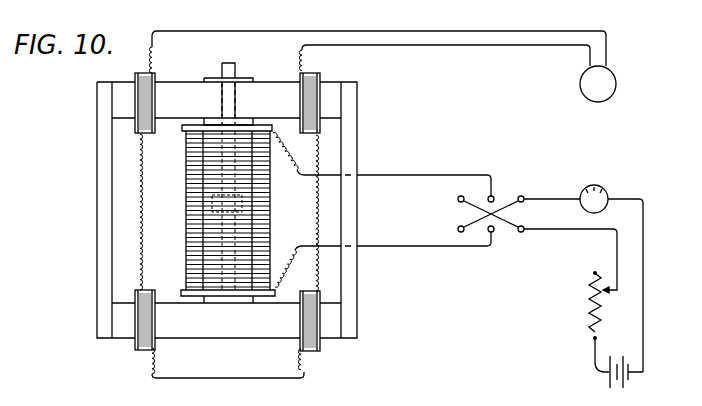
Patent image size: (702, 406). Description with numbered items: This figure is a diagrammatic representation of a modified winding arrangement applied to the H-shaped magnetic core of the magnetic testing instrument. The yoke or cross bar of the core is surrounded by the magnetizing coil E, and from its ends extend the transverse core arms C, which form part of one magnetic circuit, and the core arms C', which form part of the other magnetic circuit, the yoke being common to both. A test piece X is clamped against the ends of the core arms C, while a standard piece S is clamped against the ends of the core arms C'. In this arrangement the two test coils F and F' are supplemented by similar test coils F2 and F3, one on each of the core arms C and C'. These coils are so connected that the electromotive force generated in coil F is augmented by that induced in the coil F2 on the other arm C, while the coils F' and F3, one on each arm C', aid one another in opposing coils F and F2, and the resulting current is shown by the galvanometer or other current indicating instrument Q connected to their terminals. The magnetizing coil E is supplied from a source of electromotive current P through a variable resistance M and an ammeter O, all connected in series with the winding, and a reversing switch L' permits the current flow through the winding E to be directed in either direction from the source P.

The standard piece S is at (97, 266).
The magnetizing coil E is at (273, 226).
The core arm C is at (297, 212).
The core arm C' is at (156, 211).
The test coil F is at (283, 354).
The test coil F' is at (201, 352).
The test coil F2 is at (318, 82).
The test coil F3 is at (157, 82).
The galvanometer Q is at (604, 74).
The test piece X is at (357, 265).
The reversing switch L' is at (491, 229).
The ammeter O is at (605, 188).
The variable resistance M is at (590, 303).
The source of electromotive current P is at (629, 362).